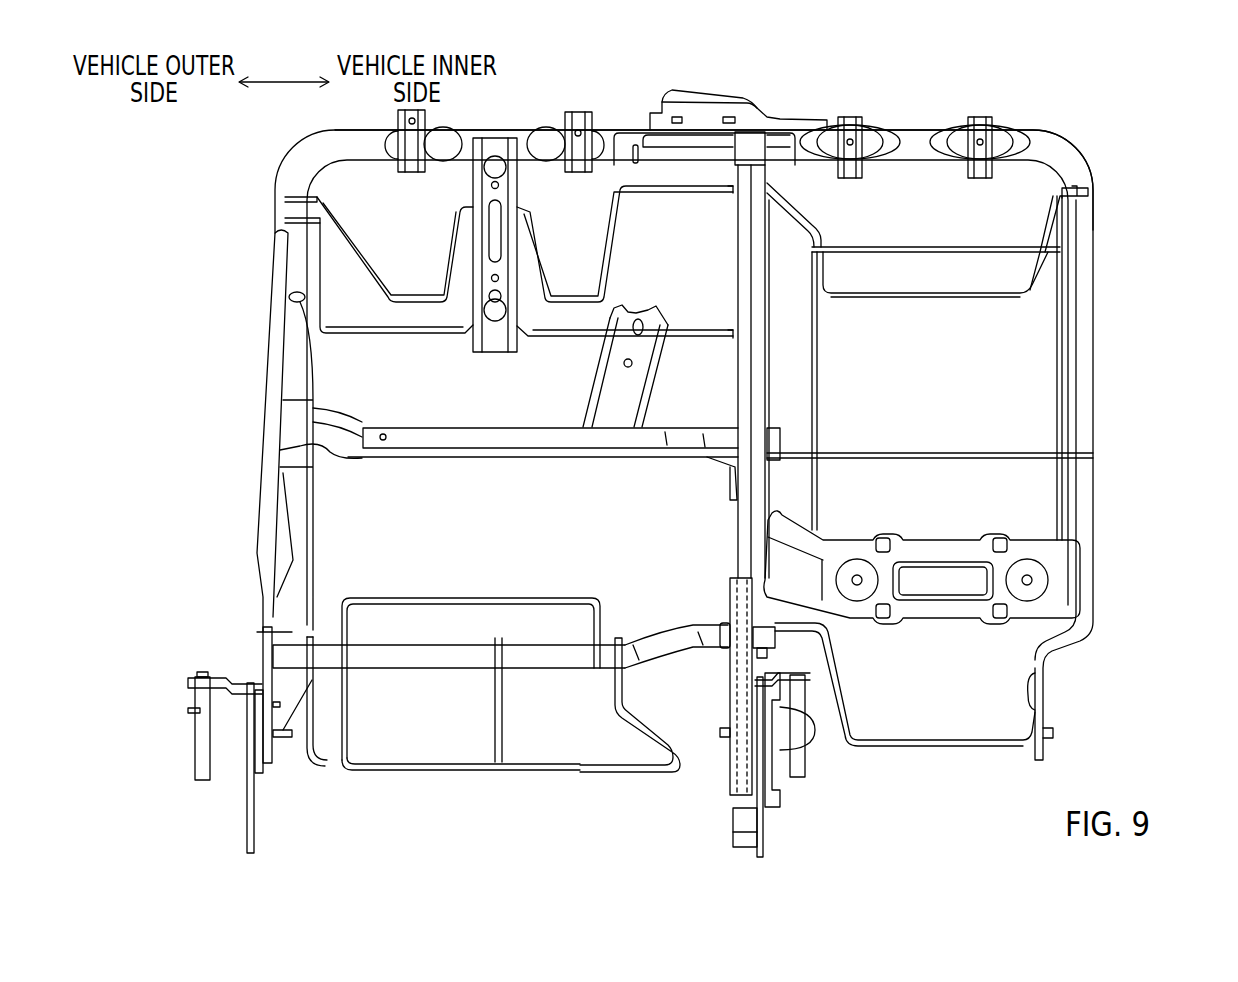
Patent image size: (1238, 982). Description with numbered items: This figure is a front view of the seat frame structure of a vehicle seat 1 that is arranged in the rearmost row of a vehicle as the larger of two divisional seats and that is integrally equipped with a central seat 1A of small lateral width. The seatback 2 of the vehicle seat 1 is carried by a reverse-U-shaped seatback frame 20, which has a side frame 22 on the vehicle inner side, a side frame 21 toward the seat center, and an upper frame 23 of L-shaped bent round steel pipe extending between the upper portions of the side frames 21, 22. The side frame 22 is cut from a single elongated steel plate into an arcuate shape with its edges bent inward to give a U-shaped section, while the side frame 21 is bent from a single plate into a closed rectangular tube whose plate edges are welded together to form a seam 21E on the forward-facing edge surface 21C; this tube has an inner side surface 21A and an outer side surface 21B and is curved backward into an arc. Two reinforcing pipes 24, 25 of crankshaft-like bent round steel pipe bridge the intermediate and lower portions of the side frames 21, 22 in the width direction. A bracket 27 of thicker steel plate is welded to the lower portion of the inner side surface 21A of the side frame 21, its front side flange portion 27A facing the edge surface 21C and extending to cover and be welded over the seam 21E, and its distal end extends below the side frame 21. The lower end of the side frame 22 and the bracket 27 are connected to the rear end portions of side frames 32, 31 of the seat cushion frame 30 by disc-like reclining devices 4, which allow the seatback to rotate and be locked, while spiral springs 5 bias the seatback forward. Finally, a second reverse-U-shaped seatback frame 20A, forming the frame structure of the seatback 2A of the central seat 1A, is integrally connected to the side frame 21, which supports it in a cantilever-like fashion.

The vehicle seat 1 is at (209, 207).
The central seat 1A is at (1143, 186).
The seatback 2 is at (622, 425).
The seatback of the central seat 2A is at (777, 154).
The seatback frame 20 is at (271, 162).
The seatback frame of the central seat 20A is at (1097, 152).
The side frame 21 is at (763, 223).
The inner side surface 21A is at (745, 268).
The outer side surface 21B is at (767, 277).
The edge surface 21C is at (760, 352).
The seam 21E is at (753, 318).
The side frame 22 is at (277, 289).
The upper frame 23 is at (510, 136).
The reinforcing pipe 24 is at (450, 437).
The reinforcing pipe 25 is at (425, 655).
The bracket 27 is at (731, 778).
The front side flange portion 27A is at (748, 612).
The seat cushion frame 30 is at (561, 767).
The side frame 31 is at (764, 835).
The side frame 32 is at (255, 822).
The reclining device 4 is at (263, 717).
The spiral spring 5 is at (200, 698).